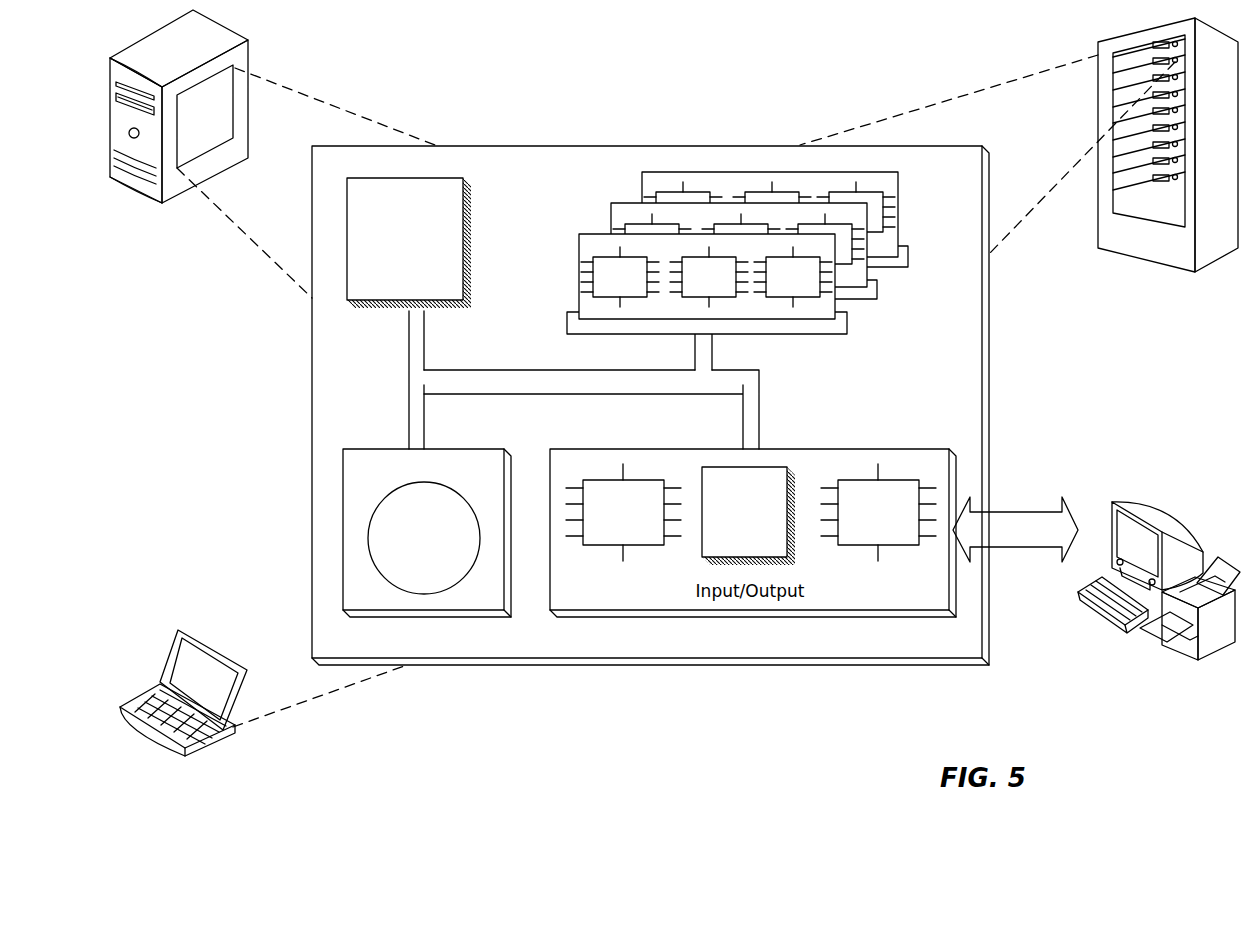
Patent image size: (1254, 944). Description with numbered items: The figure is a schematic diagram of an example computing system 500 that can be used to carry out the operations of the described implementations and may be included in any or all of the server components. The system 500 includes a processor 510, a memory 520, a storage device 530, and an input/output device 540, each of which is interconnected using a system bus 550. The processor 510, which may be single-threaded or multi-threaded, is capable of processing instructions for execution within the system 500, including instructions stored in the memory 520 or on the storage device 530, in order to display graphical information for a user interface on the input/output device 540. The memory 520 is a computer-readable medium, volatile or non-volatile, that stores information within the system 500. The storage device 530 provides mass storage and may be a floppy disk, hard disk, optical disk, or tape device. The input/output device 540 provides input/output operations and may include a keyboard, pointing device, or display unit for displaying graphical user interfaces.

The computing system 500 is at (491, 71).
The processor 510 is at (409, 243).
The memory 520 is at (912, 305).
The storage device 530 is at (427, 533).
The input/output device 540 is at (1107, 507).
The system bus 550 is at (581, 386).